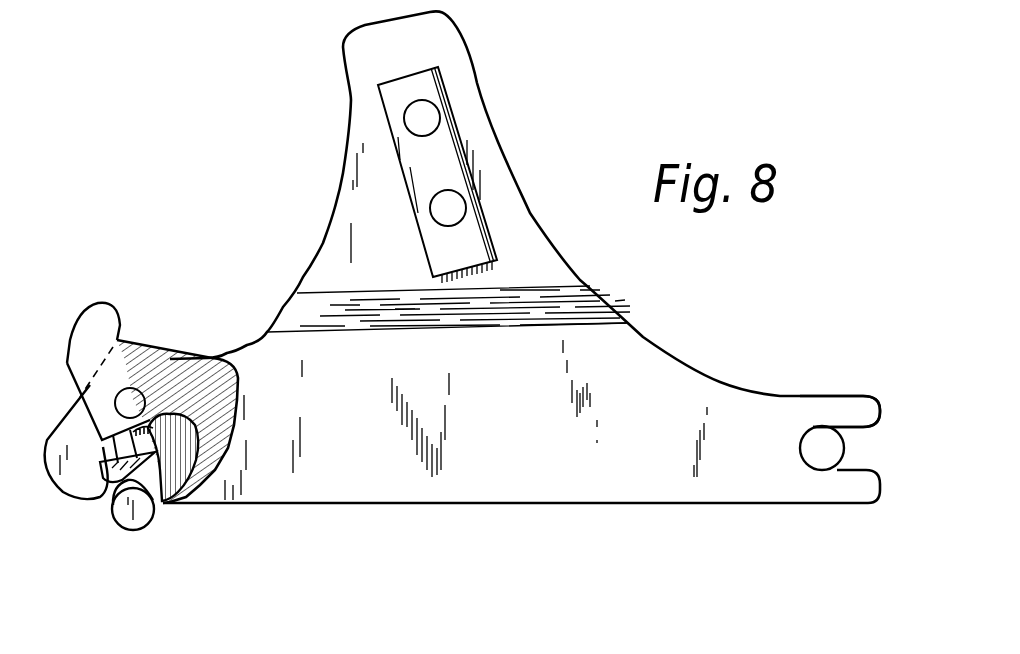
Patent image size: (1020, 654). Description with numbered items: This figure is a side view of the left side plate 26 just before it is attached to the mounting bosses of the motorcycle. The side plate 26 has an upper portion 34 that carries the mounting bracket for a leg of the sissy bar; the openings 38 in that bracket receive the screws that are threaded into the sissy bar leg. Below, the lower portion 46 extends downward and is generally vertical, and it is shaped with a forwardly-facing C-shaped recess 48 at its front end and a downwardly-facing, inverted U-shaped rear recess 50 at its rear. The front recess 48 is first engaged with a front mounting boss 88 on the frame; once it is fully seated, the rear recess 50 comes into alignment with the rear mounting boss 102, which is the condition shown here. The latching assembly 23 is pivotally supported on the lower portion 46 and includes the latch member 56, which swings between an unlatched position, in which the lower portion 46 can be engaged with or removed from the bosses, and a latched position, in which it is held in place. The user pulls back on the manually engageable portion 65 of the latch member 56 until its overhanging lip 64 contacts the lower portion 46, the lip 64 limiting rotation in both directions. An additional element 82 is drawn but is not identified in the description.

The latching assembly 23 is at (262, 411).
The side plate 26 is at (697, 370).
The upper portion 34 is at (512, 222).
The openings 38 is at (437, 117).
The lower portion 46 is at (78, 416).
The C-shaped recess 48 is at (851, 425).
The rear recess 50 is at (153, 515).
The latch member 56 is at (173, 360).
The overhanging lip 64 is at (130, 353).
The manually engageable portion 65 is at (103, 310).
The pin 82 is at (108, 485).
The front mounting boss 88 is at (825, 445).
The rear mounting boss 102 is at (123, 515).